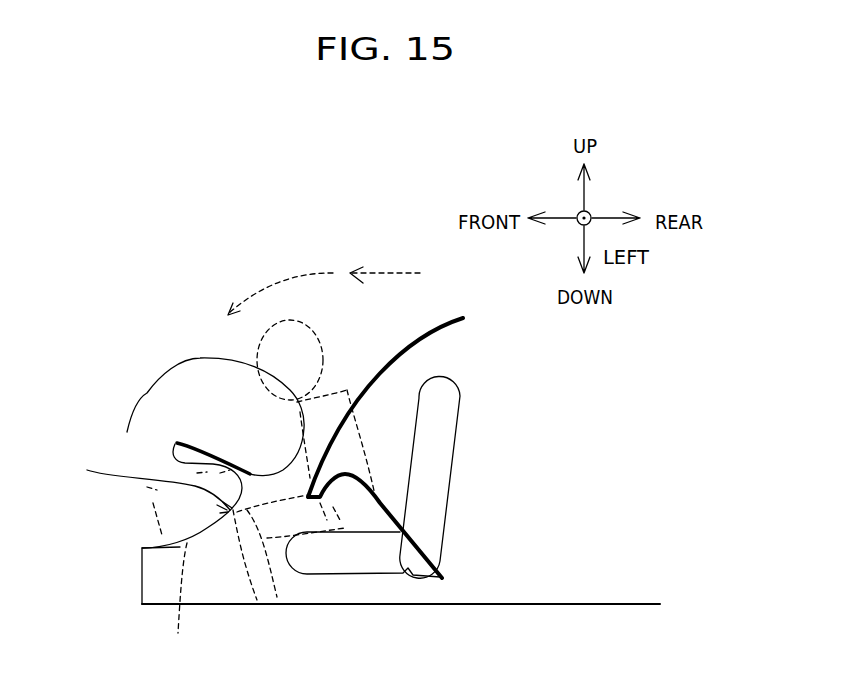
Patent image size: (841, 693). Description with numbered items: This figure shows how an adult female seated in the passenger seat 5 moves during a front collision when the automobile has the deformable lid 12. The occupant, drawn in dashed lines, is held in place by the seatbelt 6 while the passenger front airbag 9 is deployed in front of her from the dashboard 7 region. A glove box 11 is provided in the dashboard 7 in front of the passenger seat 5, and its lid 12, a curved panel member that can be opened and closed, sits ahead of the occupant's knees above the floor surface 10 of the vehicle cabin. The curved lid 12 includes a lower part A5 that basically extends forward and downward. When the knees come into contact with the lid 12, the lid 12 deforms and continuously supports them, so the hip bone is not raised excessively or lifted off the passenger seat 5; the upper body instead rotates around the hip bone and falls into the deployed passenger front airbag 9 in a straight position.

The passenger seat 5 is at (445, 446).
The seatbelt 6 is at (447, 577).
The dashboard 7 is at (178, 457).
The passenger front airbag 9 is at (203, 377).
The floor surface 10 is at (587, 602).
The glove box 11 is at (173, 517).
The lid 12 is at (177, 636).
The lower part A5 is at (87, 470).